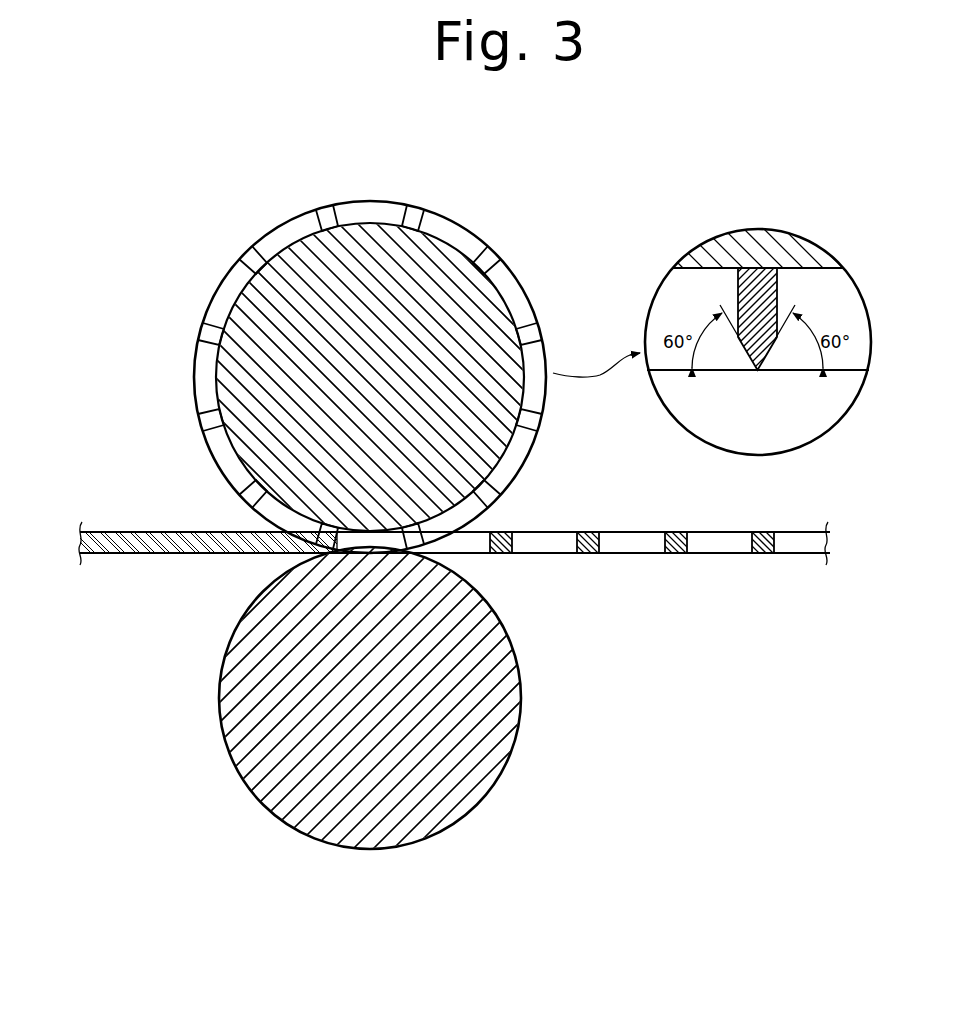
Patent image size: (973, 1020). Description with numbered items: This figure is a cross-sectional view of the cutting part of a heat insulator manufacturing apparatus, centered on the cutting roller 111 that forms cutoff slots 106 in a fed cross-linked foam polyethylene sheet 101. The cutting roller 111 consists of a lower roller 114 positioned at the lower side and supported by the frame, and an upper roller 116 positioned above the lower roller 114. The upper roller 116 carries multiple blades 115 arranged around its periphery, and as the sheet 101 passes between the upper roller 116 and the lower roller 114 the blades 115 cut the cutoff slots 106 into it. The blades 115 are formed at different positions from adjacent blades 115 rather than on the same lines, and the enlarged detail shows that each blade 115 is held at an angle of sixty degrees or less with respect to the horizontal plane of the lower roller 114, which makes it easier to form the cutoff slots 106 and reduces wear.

The cross-linked foam polyethylene sheet 101 is at (108, 530).
The cutoff slots 106 is at (637, 547).
The cutting roller 111 is at (185, 615).
The lower roller 114 is at (496, 715).
The blades 115 is at (205, 377).
The upper roller 116 is at (445, 262).